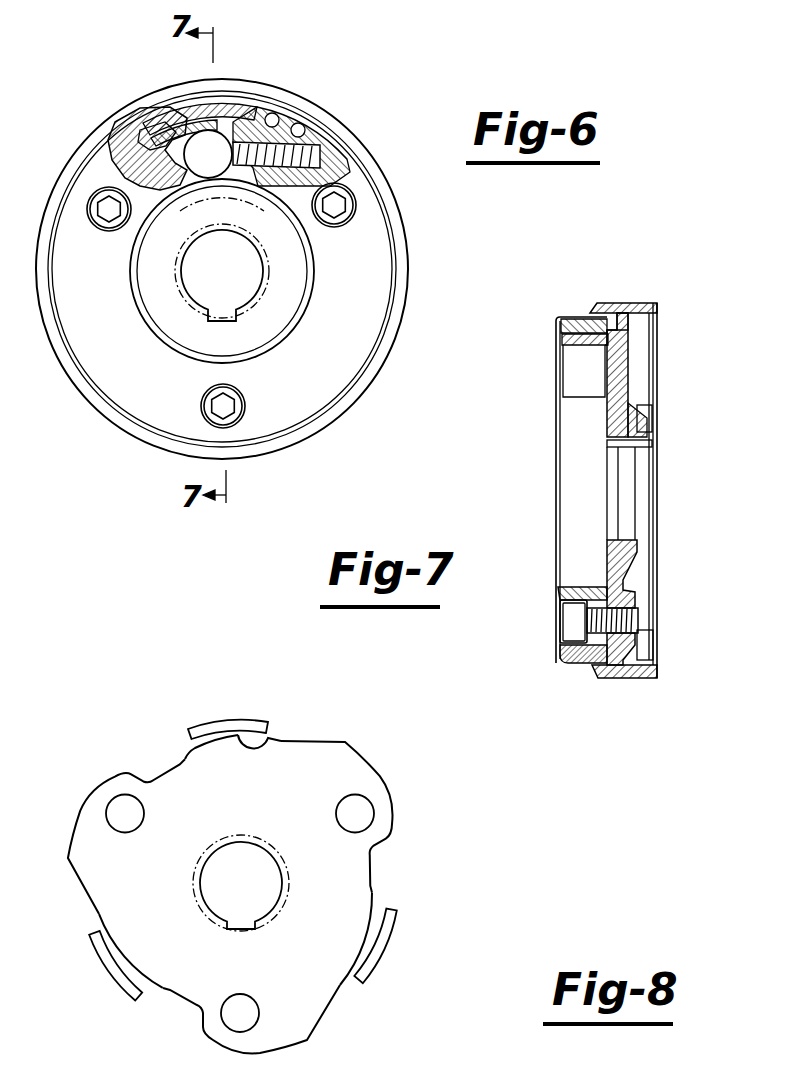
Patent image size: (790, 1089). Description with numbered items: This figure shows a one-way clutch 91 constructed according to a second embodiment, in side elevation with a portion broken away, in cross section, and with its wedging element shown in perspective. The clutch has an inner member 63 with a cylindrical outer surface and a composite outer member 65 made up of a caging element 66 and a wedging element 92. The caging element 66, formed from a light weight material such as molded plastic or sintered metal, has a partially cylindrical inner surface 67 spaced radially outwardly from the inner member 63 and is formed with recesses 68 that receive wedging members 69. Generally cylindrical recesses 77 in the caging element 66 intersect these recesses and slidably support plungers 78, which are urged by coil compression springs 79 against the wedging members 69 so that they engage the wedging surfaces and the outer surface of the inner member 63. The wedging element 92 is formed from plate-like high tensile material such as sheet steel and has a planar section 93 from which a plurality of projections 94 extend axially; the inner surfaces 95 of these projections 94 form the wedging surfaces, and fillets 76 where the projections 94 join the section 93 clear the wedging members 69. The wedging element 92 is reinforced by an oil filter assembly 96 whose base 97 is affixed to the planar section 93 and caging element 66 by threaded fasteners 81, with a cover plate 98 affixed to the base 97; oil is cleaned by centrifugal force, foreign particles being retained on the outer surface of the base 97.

In FIG. 6, the inner member 63 is at (137, 318).
In FIG. 7, the outer member 65 is at (542, 599).
In FIG. 7, the caging element 66 is at (597, 665).
In FIG. 6, the partially cylindrical inner surface 67 is at (294, 186).
In FIG. 7, the partially cylindrical inner surface 67 is at (580, 594).
In FIG. 6, the recesses 68 is at (152, 143).
In FIG. 6, the wedging members 69 is at (168, 148).
In FIG. 7, the wedging members 69 is at (573, 398).
In FIG. 7, the fillets 76 is at (603, 351).
In FIG. 6, the cylindrical recesses 77 is at (302, 140).
In FIG. 6, the plungers 78 is at (264, 140).
In FIG. 6, the coil compression springs 79 is at (324, 152).
In FIG. 6, the threaded fasteners 81 is at (246, 412).
In FIG. 7, the threaded fasteners 81 is at (560, 628).
In FIG. 6, the one-way clutch 91 is at (416, 255).
In FIG. 7, the one-way clutch 91 is at (688, 313).
In FIG. 8, the wedging element 92 is at (396, 773).
In FIG. 7, the planar section 93 is at (607, 543).
In FIG. 8, the planar section 93 is at (332, 740).
In FIG. 6, the projections 94 is at (188, 125).
In FIG. 7, the projections 94 is at (570, 320).
In FIG. 8, the projections 94 is at (212, 724).
In FIG. 6, the inner surfaces 95 is at (226, 112).
In FIG. 7, the inner surfaces 95 is at (580, 348).
In FIG. 8, the inner surfaces 95 is at (272, 737).
In FIG. 7, the oil filter assembly 96 is at (614, 294).
In FIG. 7, the base 97 is at (631, 299).
In FIG. 7, the cover plate 98 is at (658, 356).